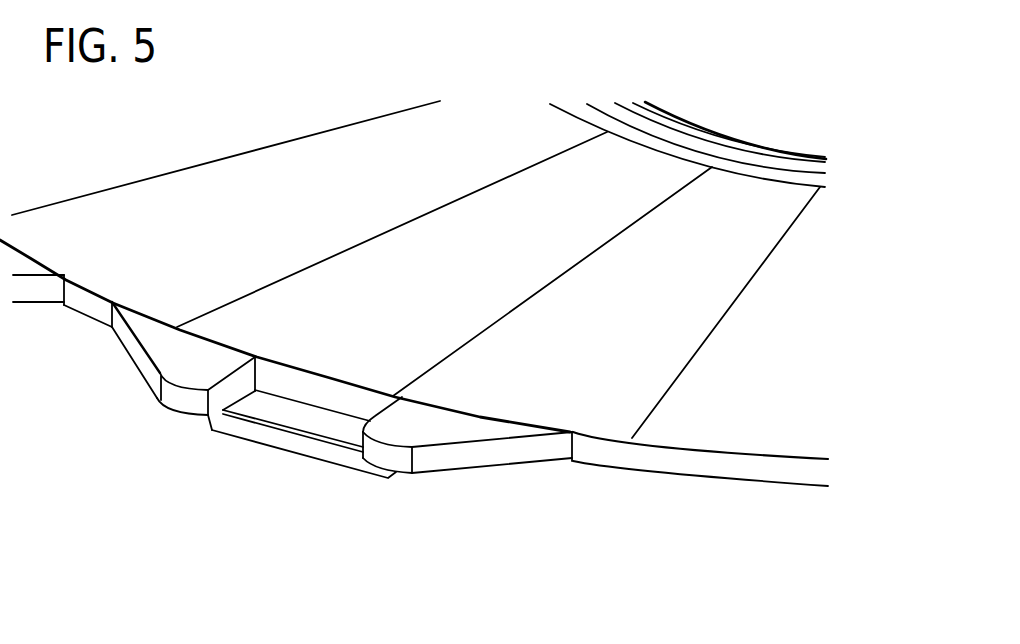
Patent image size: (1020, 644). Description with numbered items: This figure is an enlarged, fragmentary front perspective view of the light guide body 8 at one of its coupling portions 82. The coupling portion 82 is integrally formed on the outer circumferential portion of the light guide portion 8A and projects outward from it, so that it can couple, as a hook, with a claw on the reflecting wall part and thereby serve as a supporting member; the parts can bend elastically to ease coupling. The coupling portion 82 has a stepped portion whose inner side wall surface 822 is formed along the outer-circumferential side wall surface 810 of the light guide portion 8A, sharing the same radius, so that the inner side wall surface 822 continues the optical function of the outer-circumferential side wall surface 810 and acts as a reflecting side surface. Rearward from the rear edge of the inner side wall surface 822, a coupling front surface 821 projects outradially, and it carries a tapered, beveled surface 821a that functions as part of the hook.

The light guide body 8 is at (547, 530).
The light guide portion 8A is at (688, 102).
The outer-circumferential side wall surface 810 is at (89, 301).
The coupling portion 82 is at (342, 448).
The coupling front surface 821 is at (305, 413).
The tapered surface 821a is at (243, 420).
The inner side wall surface 822 is at (350, 408).